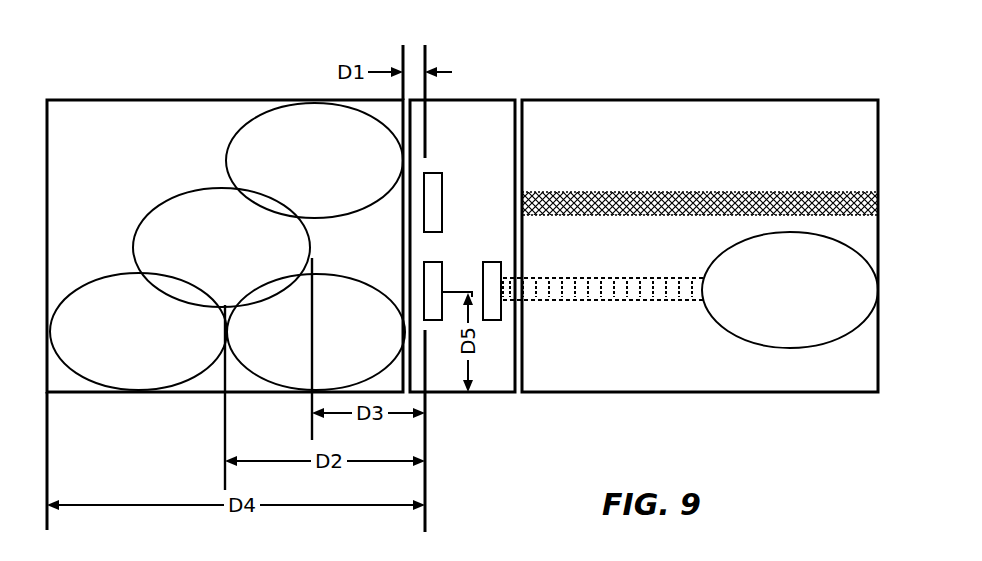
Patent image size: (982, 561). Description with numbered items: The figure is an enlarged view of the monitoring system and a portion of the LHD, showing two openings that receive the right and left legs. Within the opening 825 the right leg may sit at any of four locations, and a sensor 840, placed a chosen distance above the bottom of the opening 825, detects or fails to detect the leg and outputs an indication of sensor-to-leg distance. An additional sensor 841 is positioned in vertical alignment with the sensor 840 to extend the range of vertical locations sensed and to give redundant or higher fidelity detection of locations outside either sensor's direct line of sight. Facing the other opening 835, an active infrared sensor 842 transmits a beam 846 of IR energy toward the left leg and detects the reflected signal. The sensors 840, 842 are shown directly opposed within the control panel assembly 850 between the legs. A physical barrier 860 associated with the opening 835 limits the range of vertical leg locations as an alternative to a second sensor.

The opening 825 is at (135, 98).
The control panel assembly 850 is at (490, 98).
The additional sensor 841 is at (441, 173).
The sensor 840 is at (434, 321).
The sensor 842 is at (492, 321).
The beam 846 is at (605, 302).
The physical barrier 860 is at (688, 192).
The opening 835 is at (762, 393).